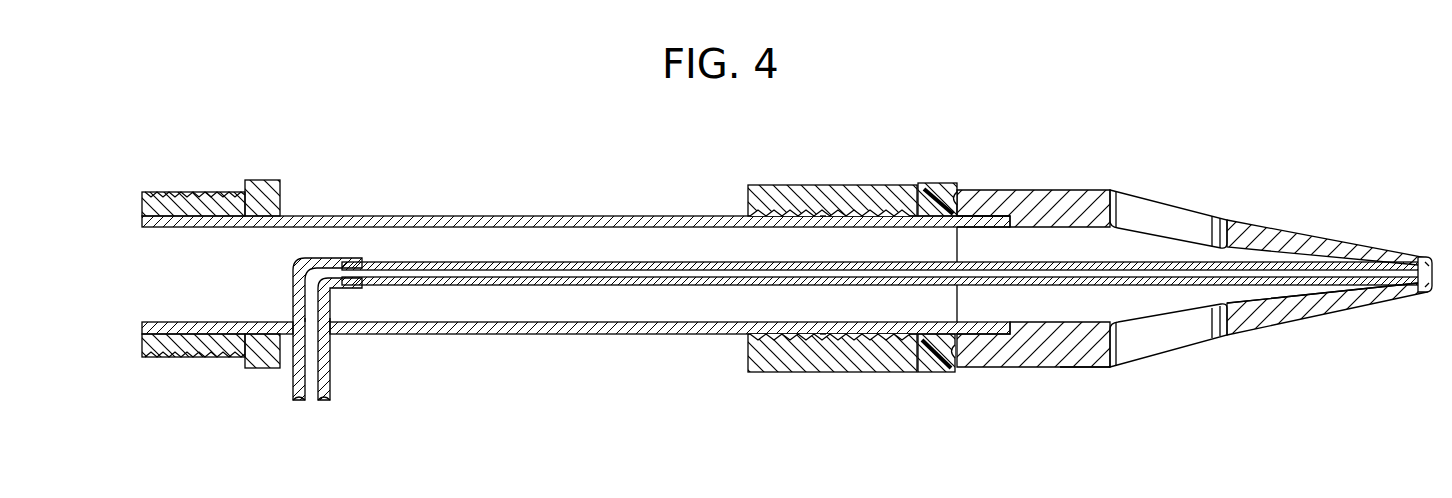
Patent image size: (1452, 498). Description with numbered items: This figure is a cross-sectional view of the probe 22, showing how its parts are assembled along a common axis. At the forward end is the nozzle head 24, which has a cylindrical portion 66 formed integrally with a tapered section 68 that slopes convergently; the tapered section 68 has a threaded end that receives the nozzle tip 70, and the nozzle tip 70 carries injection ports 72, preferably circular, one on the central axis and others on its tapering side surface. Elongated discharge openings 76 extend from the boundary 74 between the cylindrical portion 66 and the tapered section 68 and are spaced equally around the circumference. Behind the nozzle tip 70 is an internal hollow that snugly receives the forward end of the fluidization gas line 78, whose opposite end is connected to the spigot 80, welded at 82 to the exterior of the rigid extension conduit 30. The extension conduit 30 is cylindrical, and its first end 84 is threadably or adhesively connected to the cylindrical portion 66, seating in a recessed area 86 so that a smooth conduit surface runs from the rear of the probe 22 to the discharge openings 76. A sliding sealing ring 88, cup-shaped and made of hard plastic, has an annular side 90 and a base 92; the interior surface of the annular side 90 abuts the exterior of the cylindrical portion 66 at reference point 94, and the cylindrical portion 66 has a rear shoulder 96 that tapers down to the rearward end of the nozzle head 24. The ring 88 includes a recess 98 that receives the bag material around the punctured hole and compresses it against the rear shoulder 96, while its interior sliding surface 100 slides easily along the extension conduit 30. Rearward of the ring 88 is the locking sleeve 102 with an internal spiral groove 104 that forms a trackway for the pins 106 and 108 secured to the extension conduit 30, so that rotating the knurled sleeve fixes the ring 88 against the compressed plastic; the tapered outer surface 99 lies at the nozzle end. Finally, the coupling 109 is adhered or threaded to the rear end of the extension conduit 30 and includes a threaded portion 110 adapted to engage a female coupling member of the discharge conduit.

The probe 22 is at (532, 214).
The nozzle head 24 is at (1078, 200).
The rigid extension conduit 30 is at (613, 335).
The cylindrical portion 66 is at (1088, 367).
The tapered section 68 is at (1240, 336).
The nozzle tip 70 is at (1324, 318).
The injection ports 72 is at (1435, 252).
The boundary 74 is at (1112, 367).
The elongated discharge openings 76 is at (1155, 212).
The fluidization gas line 78 is at (617, 285).
The spigot 80 is at (333, 318).
The weld 82 is at (333, 335).
The first end 84 is at (990, 228).
The recessed area 86 is at (1020, 367).
The sliding sealing ring 88 is at (947, 183).
The annular side 90 is at (957, 187).
The base 92 is at (915, 377).
The reference point 94 is at (973, 206).
The rear shoulder 96 is at (962, 358).
The recess 98 is at (947, 380).
The upper tapered cone 99 is at (1358, 245).
The interior sliding surface 100 is at (937, 190).
The locking sleeve 102 is at (762, 185).
The spiral groove 104 is at (797, 185).
The pin 106 is at (823, 224).
The pin 108 is at (823, 329).
The coupling 109 is at (282, 203).
The threaded portion 110 is at (172, 192).